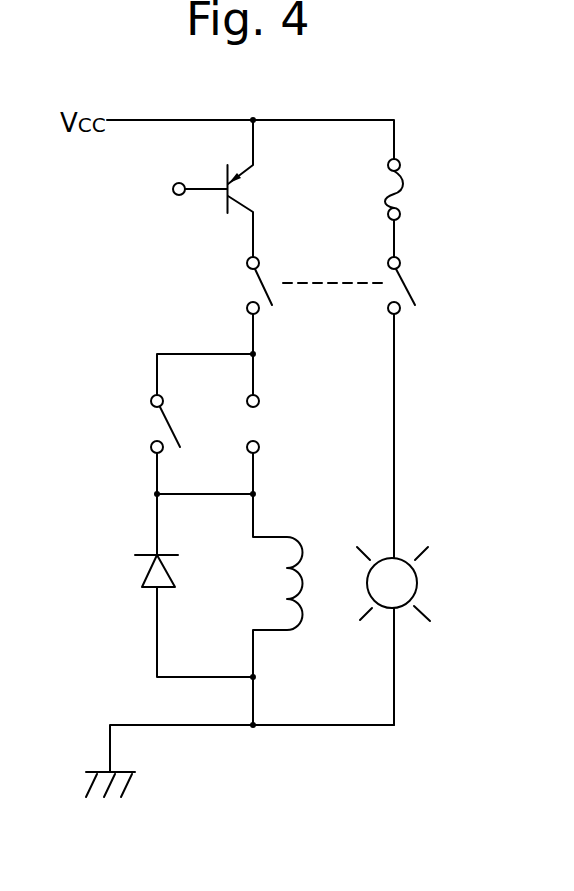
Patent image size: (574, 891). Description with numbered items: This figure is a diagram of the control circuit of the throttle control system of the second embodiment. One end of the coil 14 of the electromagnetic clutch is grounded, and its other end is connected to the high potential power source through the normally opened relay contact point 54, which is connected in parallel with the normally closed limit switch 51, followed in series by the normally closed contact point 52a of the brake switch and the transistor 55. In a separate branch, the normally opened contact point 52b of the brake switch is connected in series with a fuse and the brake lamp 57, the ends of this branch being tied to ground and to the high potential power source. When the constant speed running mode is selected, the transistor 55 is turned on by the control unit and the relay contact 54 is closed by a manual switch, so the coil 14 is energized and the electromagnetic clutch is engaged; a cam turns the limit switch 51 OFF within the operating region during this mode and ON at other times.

The transistor 55 is at (243, 192).
The normally closed contact point of brake switch 52a is at (258, 283).
The normally opened contact point of brake switch 52b is at (405, 286).
The normally opened relay contact point 54 is at (160, 423).
The normally closed limit switch 51 is at (256, 427).
The coil 14 is at (278, 588).
The brake lamp 57 is at (417, 586).